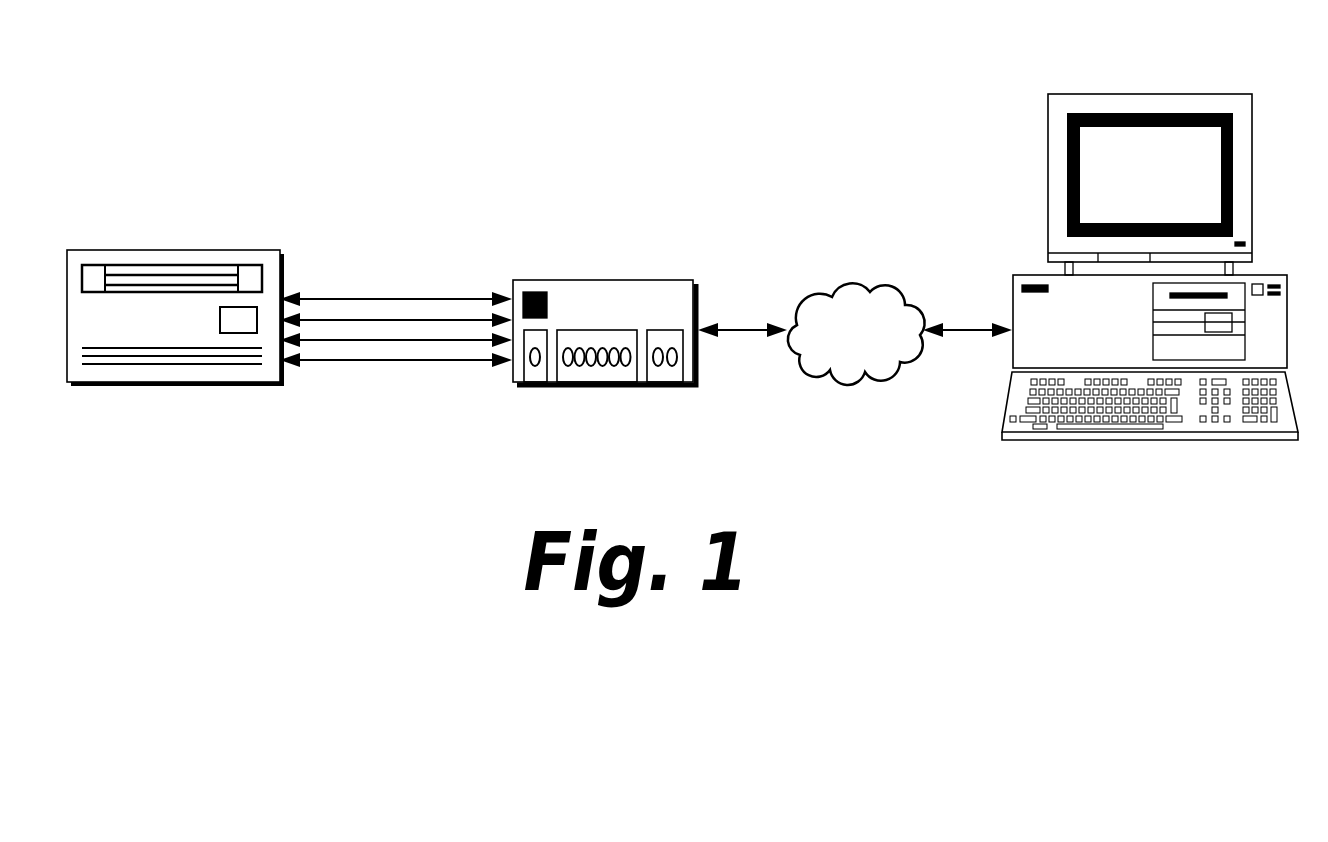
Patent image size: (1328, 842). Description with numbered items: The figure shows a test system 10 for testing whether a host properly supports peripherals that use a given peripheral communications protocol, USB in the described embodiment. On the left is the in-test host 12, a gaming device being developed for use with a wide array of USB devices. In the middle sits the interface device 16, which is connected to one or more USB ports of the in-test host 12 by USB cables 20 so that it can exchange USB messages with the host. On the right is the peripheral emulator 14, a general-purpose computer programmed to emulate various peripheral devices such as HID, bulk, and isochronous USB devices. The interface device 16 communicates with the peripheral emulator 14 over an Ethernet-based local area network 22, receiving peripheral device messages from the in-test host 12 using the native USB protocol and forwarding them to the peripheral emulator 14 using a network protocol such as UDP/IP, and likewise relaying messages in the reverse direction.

The test system 10 is at (701, 112).
The in-test host 12 is at (152, 258).
The peripheral emulator 14 is at (1035, 283).
The interface device 16 is at (635, 298).
The USB cables 20 is at (438, 292).
The local area network 22 is at (867, 353).